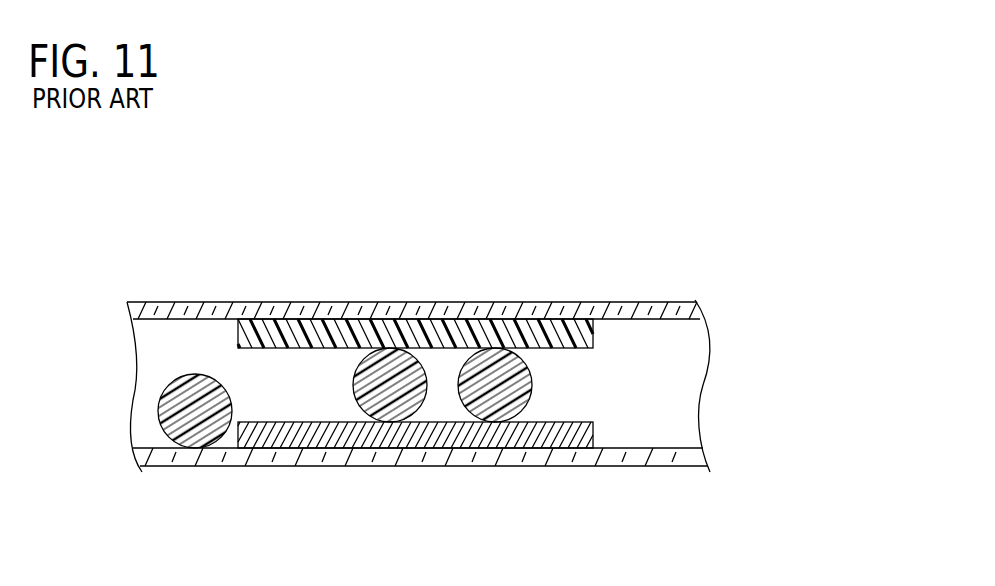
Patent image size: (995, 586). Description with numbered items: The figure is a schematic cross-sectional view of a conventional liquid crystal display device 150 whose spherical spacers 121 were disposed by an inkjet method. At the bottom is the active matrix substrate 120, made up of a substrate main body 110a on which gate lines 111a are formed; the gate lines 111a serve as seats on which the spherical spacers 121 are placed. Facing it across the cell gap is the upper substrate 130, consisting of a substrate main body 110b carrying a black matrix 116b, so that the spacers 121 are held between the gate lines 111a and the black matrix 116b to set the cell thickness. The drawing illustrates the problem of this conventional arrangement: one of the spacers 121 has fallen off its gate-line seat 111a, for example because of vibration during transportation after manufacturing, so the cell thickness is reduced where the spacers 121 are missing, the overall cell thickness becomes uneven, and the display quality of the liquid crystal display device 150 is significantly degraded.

The liquid crystal display device 150 is at (182, 252).
The upper substrate assembly 130 is at (830, 285).
The substrate main body 110b is at (685, 311).
The black matrix 116b is at (577, 337).
The spherical spacers 121 is at (385, 395).
The active matrix substrate 120 is at (830, 417).
The gate lines 111a is at (577, 432).
The substrate main body 110a is at (685, 455).